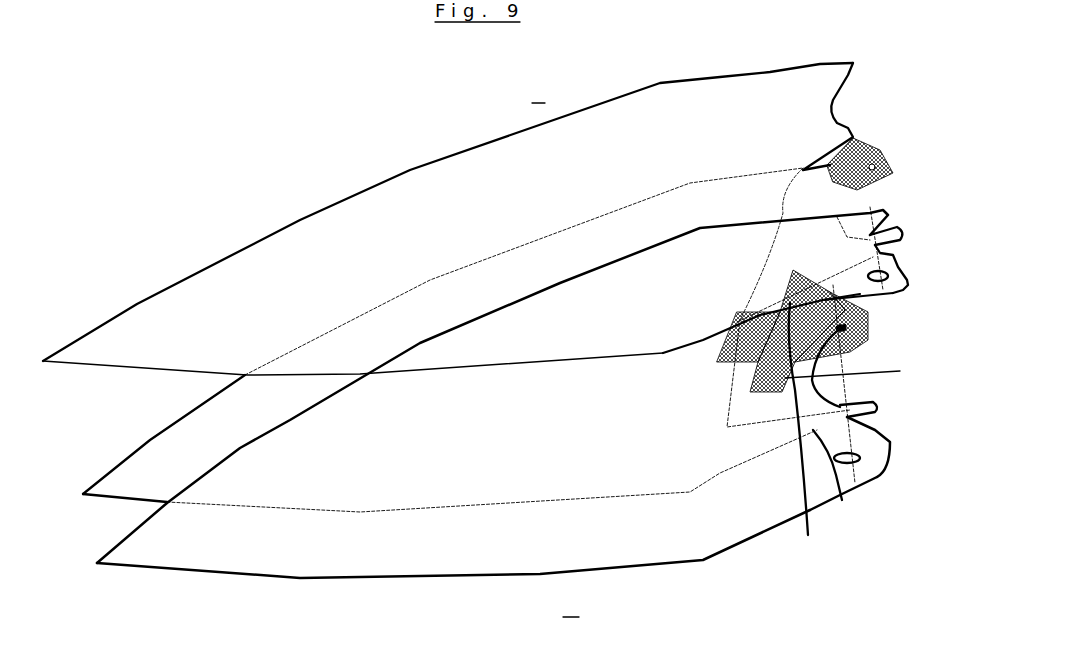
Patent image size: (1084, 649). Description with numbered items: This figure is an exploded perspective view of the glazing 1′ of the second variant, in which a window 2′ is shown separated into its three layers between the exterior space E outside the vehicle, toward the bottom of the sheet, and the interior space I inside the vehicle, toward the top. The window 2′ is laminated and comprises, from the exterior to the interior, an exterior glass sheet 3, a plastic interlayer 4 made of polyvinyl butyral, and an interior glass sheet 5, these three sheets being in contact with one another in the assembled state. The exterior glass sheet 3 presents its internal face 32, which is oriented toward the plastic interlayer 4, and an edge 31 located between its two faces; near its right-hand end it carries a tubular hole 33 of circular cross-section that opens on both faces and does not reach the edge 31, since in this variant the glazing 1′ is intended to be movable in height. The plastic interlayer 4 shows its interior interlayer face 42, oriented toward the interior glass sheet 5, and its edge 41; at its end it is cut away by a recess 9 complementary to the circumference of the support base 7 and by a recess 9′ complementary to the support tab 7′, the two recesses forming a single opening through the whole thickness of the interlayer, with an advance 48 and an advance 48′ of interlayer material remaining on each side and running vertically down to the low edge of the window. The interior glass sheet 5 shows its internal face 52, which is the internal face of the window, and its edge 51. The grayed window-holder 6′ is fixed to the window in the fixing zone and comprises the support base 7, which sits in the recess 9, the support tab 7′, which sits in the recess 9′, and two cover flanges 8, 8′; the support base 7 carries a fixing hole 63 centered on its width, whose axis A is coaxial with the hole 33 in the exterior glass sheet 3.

The glazing 1′ is at (900, 123).
The window 2′ is at (240, 217).
The exterior glass sheet 3 is at (514, 399).
The edge 31 is at (740, 540).
The internal face 32 is at (174, 552).
The hole 33 is at (887, 473).
The plastic interlayer 4 is at (443, 340).
The edge 41 is at (120, 466).
The interior interlayer face 42 is at (129, 490).
The advance 48 is at (842, 500).
The advance 48′ is at (858, 368).
The interior glass sheet 5 is at (475, 207).
The edge 51 is at (856, 68).
The internal face 52 is at (126, 352).
The window-holder 6′ is at (887, 165).
The fixing hole 63 is at (790, 303).
The support base 7 is at (847, 330).
The support tab 7′ is at (750, 360).
The cover flange 8 is at (802, 430).
The cover flange 8′ is at (832, 300).
The recess 9 is at (887, 326).
The recess 9′ is at (877, 407).
The mounting hole axis A is at (867, 193).
The interior space I is at (538, 92).
The exterior space E is at (571, 606).